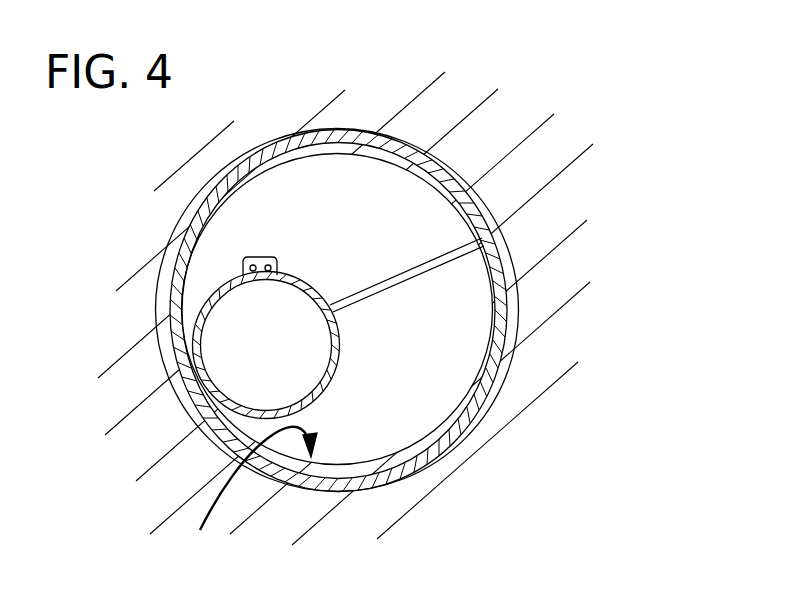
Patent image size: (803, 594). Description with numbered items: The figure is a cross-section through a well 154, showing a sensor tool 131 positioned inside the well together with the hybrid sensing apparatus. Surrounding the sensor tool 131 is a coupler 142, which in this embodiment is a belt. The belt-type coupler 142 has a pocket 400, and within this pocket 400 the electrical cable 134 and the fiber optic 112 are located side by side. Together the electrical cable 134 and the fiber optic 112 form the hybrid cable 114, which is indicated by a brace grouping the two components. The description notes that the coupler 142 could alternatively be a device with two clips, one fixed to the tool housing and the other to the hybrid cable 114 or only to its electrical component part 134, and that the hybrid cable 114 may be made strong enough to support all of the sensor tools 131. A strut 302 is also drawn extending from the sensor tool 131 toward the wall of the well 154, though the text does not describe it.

The pocket 400 is at (260, 257).
The fiber optic 112 is at (254, 263).
The electrical cable 134 is at (272, 262).
The hybrid cable 114 is at (581, 1).
The sensor tool 131 is at (283, 352).
The coupler 142 is at (340, 350).
The support strut 302 is at (412, 274).
The well 154 is at (242, 497).